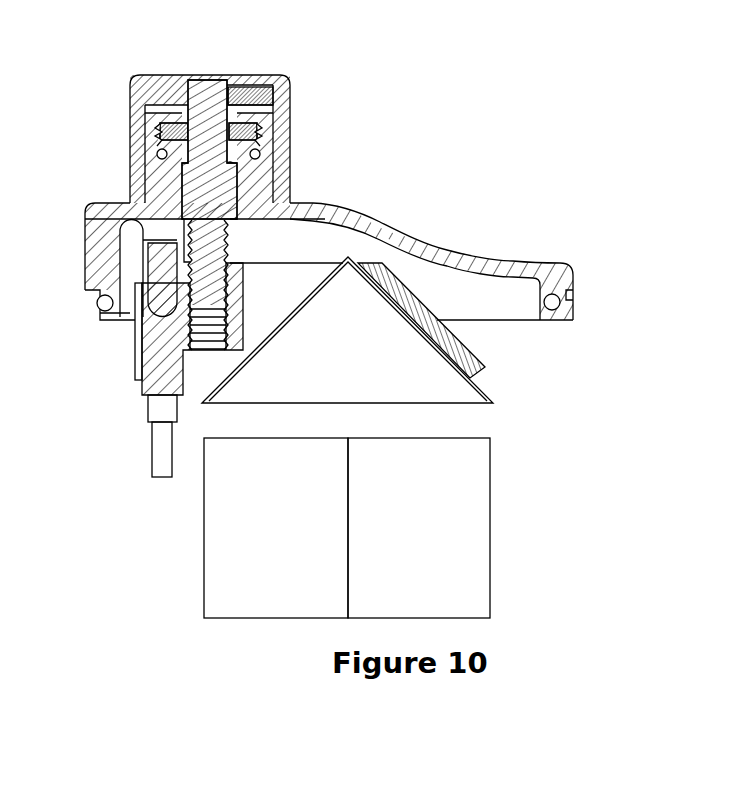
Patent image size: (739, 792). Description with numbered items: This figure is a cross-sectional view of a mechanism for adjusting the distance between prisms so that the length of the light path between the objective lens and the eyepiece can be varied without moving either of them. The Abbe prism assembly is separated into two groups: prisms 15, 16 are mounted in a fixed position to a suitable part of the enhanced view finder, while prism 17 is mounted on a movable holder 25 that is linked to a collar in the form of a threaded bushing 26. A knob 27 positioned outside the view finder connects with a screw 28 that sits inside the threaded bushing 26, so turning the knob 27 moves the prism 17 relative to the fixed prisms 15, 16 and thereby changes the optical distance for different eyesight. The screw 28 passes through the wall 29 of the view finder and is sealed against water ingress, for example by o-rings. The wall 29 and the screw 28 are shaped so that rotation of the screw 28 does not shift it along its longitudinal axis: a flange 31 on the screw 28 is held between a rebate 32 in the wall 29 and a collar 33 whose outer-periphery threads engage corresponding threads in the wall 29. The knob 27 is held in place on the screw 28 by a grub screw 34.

The prism 15 is at (475, 495).
The prism 16 is at (228, 528).
The prism 17 is at (360, 315).
The holder 25 is at (435, 317).
The threaded bushing 26 is at (250, 282).
The knob 27 is at (155, 92).
The screw 28 is at (138, 350).
The wall 29 is at (378, 220).
The flange 31 is at (190, 143).
The rebate 32 is at (152, 212).
The collar 33 is at (292, 118).
The grub screw 34 is at (285, 78).